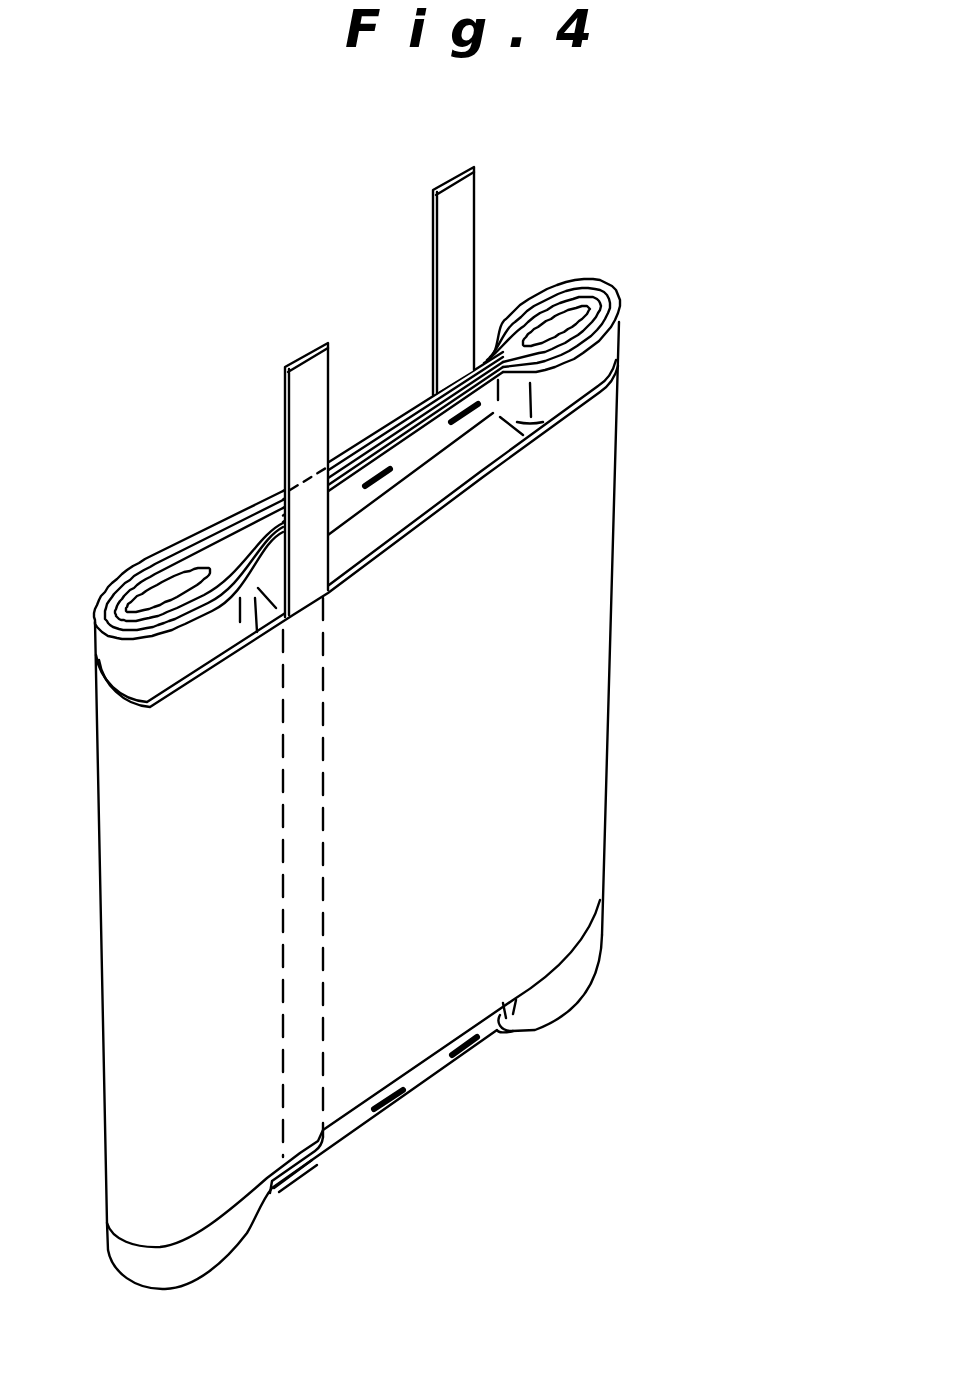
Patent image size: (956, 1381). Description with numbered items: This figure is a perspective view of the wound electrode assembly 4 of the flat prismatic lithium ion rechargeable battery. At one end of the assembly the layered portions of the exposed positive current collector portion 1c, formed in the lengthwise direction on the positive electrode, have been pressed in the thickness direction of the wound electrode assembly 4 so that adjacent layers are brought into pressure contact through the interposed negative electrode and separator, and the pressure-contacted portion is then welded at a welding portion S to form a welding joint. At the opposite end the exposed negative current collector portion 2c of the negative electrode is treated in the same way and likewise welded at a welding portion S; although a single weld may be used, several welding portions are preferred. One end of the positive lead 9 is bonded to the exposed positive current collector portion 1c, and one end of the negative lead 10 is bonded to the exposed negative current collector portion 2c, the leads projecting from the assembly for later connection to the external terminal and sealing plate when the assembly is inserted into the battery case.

The wound electrode assembly 4 is at (614, 523).
The positive lead 9 is at (462, 210).
The negative lead 10 is at (303, 403).
The exposed positive current collector portion 1c is at (590, 360).
The exposed negative current collector portion 2c is at (566, 992).
The welding portion S is at (378, 466).